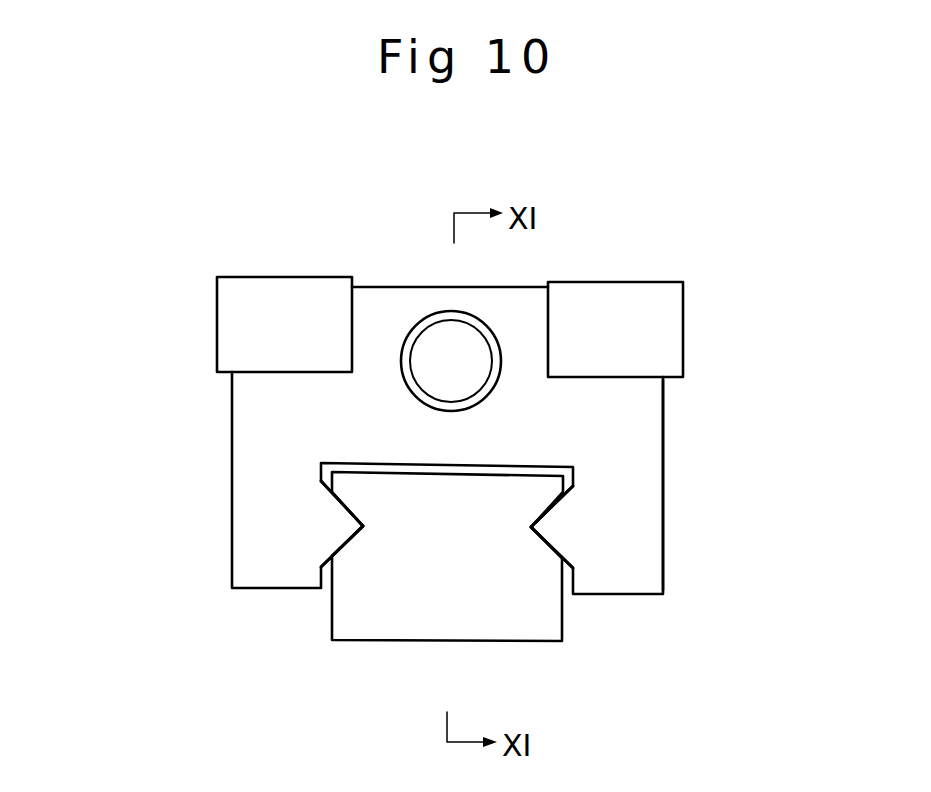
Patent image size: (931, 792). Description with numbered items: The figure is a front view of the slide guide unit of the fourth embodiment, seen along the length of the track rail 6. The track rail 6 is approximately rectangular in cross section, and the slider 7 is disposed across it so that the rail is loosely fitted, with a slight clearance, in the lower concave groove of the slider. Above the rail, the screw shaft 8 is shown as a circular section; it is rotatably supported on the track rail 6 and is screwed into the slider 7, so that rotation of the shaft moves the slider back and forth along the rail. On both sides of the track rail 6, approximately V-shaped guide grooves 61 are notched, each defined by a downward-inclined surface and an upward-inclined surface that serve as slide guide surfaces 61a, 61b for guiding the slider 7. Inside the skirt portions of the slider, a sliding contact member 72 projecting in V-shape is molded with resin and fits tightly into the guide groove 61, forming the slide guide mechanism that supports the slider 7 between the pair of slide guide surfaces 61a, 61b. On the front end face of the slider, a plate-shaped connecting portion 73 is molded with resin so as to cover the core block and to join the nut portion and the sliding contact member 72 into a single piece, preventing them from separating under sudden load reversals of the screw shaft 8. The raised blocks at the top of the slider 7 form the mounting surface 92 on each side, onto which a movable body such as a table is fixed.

The track rail 6 is at (573, 635).
The slider 7 is at (655, 280).
The screw shaft 8 is at (433, 337).
The guide groove 61 is at (127, 453).
The slide guide surface 61a is at (347, 508).
The slide guide surface 61b is at (347, 540).
The sliding contact member 72 is at (337, 528).
The connecting portion 73 is at (650, 405).
The mounting surface 92 is at (276, 277).